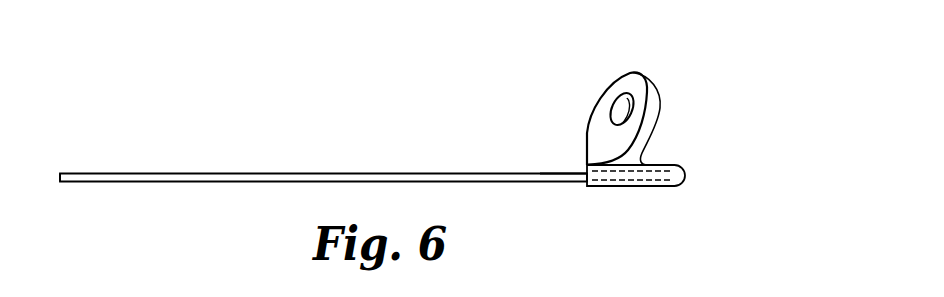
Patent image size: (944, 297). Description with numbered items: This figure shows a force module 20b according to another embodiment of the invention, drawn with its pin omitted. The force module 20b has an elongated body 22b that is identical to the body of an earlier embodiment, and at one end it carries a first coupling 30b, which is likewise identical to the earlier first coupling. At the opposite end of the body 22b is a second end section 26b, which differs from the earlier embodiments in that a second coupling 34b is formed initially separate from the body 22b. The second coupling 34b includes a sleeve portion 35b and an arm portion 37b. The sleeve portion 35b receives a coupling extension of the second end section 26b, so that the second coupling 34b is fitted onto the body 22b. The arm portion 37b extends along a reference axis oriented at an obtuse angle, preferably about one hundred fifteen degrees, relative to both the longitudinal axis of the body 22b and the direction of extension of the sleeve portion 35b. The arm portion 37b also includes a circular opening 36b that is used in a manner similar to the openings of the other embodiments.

The force module 20b is at (684, 61).
The body 22b is at (257, 168).
The second end section 26b is at (552, 172).
The first coupling 30b is at (75, 177).
The second coupling 34b is at (660, 147).
The sleeve portion 35b is at (623, 187).
The circular opening 36b is at (621, 106).
The arm portion 37b is at (653, 104).